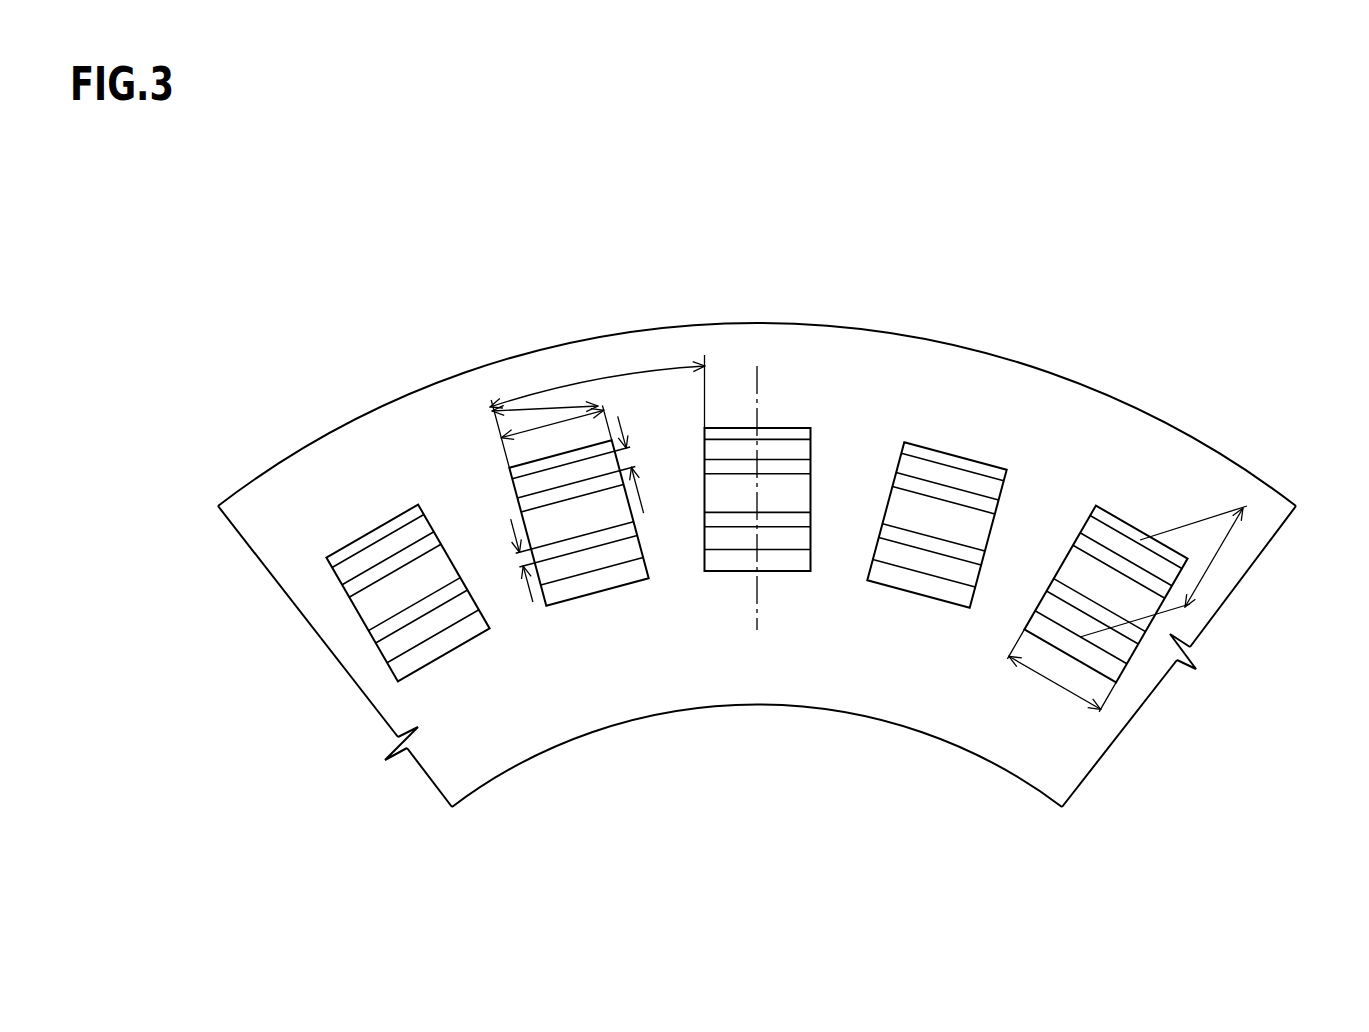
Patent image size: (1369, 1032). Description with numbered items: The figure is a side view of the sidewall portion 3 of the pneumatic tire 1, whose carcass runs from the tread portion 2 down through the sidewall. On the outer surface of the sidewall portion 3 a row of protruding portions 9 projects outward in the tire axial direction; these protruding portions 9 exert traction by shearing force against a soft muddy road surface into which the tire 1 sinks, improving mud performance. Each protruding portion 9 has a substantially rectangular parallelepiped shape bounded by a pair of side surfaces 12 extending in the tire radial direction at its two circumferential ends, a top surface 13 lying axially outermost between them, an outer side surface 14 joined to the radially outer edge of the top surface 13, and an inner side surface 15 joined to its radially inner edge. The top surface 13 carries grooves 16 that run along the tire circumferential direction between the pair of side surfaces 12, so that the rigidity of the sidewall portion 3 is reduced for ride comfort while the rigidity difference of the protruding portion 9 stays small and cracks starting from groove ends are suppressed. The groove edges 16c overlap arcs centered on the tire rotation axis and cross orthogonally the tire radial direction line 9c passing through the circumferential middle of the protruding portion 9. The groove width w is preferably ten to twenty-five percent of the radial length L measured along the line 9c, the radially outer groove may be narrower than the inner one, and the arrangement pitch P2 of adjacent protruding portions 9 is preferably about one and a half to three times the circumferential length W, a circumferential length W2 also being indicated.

The pneumatic tire 1 is at (930, 213).
The tread portion 2 is at (940, 338).
The sidewall portion 3 is at (1063, 740).
The protruding portion 9 is at (1123, 493).
The tire radial direction line 9c is at (757, 400).
The side surface 12 is at (903, 458).
The top surface 13 is at (982, 482).
The outer side surface 14 is at (925, 448).
The inner side surface 15 is at (437, 645).
The groove 16 is at (357, 582).
The groove edge 16c is at (952, 486).
The length in the tire circumferential direction of the protruding portion W is at (1053, 682).
The length in the tire circumferential direction of the protruding portion W2 is at (548, 423).
The arrangement pitch P2 is at (597, 383).
The length in the tire radial direction of the protruding portion L is at (1213, 562).
The width of the groove w is at (517, 562).